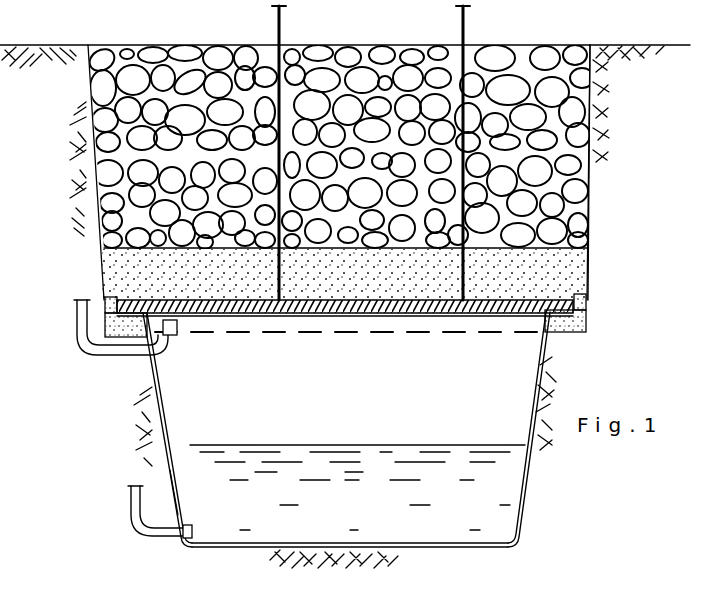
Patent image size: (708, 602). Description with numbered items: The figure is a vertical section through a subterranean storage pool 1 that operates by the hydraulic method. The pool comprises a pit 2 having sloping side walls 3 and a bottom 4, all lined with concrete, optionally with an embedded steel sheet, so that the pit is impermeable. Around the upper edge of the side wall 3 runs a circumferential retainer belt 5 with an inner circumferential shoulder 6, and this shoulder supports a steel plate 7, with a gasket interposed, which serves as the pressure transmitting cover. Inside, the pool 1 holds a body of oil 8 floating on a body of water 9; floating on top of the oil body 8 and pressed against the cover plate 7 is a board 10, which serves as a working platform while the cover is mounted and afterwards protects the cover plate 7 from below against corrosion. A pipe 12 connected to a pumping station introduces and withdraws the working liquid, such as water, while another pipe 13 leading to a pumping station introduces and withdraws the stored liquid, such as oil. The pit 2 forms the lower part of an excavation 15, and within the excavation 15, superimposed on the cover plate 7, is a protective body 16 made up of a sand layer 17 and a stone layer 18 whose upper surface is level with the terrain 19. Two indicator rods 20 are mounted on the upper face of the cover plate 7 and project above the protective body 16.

The storage pool 1 is at (128, 423).
The pit 2 is at (515, 497).
The side walls 3 is at (163, 418).
The bottom 4 is at (303, 545).
The retainer belt 5 is at (105, 332).
The inner circumferential shoulder 6 is at (106, 306).
The steel plate 7 is at (220, 301).
The body of oil 8 is at (510, 356).
The body of water 9 is at (173, 488).
The board 10 is at (341, 317).
The pipe 12 is at (167, 540).
The pipe 13 is at (96, 352).
The excavation 15 is at (592, 230).
The protective body 16 is at (78, 250).
The sand layer 17 is at (112, 268).
The stone layer 18 is at (133, 82).
The terrain 19 is at (35, 46).
The indicator rods 20 is at (281, 44).